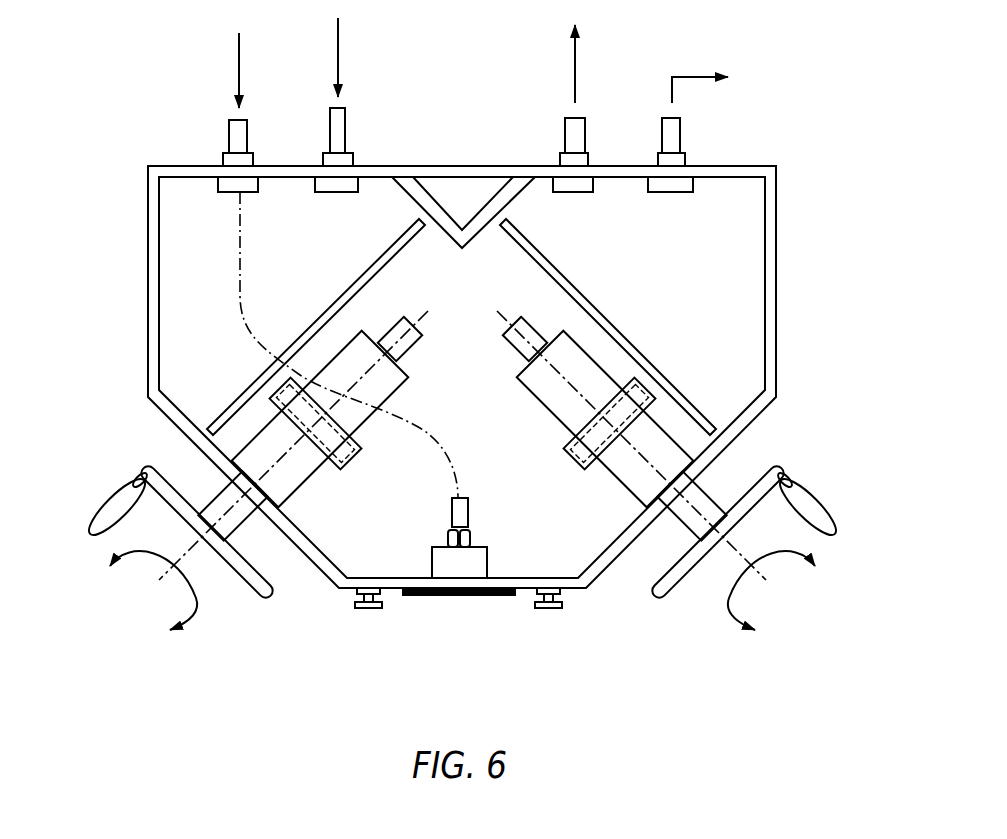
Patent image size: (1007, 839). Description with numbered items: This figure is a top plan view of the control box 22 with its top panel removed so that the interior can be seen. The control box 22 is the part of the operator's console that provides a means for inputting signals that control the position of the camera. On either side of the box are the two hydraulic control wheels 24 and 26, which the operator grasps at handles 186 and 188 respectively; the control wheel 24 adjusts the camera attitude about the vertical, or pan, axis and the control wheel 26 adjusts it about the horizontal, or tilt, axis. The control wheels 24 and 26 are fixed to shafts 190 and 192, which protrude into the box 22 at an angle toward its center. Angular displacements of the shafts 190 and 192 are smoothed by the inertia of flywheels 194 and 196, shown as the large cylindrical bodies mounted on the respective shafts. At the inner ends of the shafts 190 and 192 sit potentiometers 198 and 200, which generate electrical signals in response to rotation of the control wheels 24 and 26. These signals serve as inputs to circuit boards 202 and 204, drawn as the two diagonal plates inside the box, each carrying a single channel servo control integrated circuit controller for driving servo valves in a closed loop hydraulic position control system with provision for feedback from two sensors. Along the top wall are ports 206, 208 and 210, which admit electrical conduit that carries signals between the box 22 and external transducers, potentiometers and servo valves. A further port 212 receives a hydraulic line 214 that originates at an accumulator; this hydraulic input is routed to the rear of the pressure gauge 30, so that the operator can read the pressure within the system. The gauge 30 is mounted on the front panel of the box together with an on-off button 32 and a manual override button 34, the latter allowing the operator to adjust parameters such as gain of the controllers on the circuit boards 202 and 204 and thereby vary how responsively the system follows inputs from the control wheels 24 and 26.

The control box 22 is at (792, 272).
The hydraulic control wheel 24 is at (253, 598).
The hydraulic control wheel 26 is at (681, 596).
The gauge 30 is at (457, 596).
The on-off button 32 is at (369, 610).
The manual override button 34 is at (550, 608).
The handle 186 is at (113, 500).
The handle 188 is at (822, 535).
The shaft 190 is at (250, 526).
The shaft 192 is at (705, 482).
The flywheel 194 is at (347, 466).
The flywheel 196 is at (563, 456).
The potentiometer 198 is at (410, 350).
The potentiometer 200 is at (527, 327).
The circuit board 202 is at (378, 258).
The circuit board 204 is at (550, 262).
The port 206 is at (372, 152).
The port 208 is at (540, 157).
The port 210 is at (695, 147).
The port 212 is at (218, 157).
The hydraulic line 214 is at (229, 131).